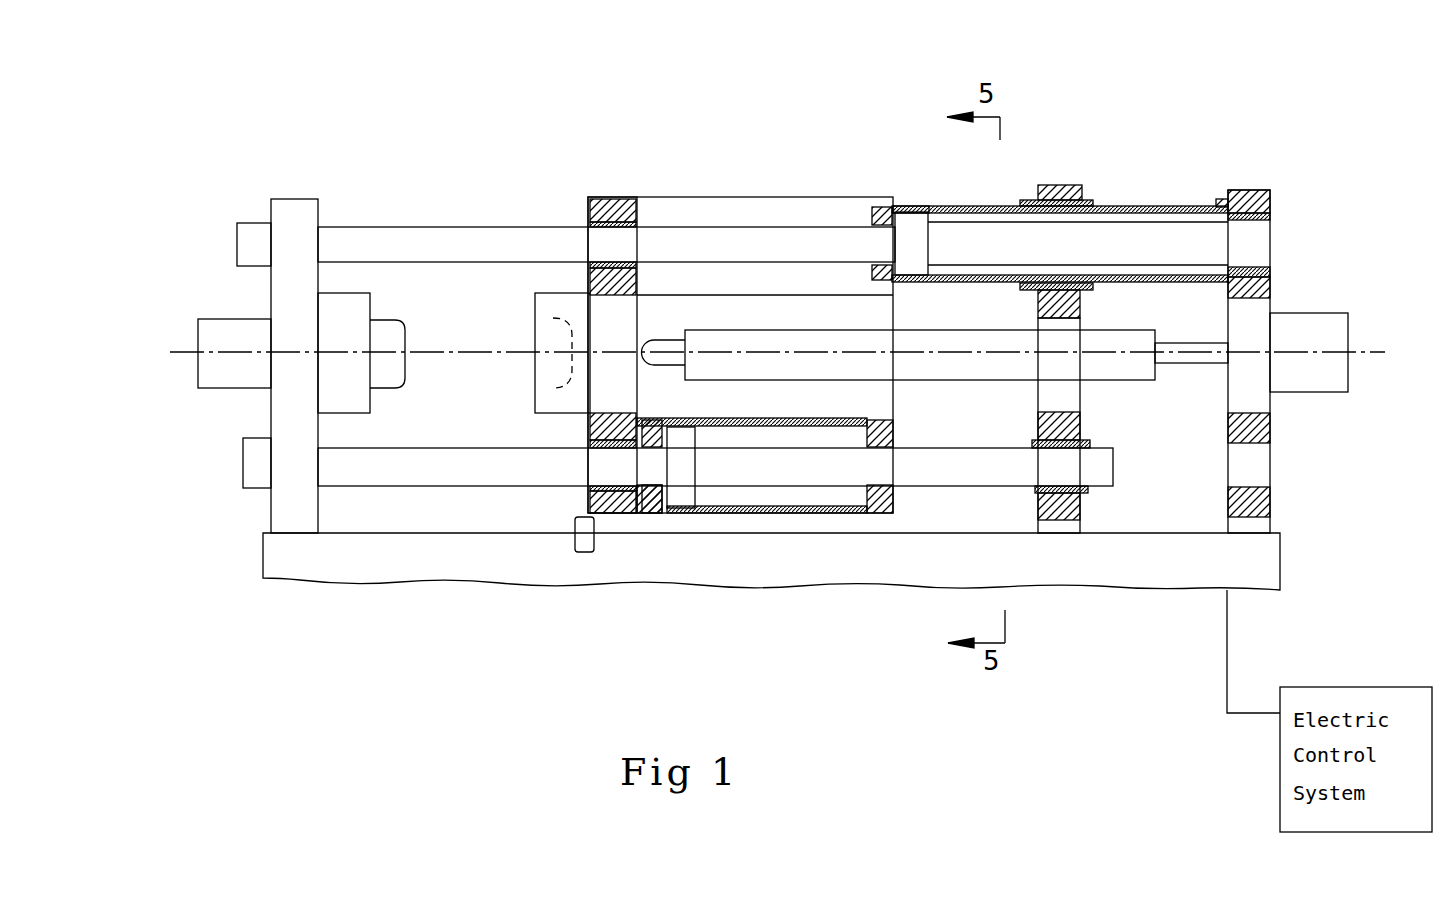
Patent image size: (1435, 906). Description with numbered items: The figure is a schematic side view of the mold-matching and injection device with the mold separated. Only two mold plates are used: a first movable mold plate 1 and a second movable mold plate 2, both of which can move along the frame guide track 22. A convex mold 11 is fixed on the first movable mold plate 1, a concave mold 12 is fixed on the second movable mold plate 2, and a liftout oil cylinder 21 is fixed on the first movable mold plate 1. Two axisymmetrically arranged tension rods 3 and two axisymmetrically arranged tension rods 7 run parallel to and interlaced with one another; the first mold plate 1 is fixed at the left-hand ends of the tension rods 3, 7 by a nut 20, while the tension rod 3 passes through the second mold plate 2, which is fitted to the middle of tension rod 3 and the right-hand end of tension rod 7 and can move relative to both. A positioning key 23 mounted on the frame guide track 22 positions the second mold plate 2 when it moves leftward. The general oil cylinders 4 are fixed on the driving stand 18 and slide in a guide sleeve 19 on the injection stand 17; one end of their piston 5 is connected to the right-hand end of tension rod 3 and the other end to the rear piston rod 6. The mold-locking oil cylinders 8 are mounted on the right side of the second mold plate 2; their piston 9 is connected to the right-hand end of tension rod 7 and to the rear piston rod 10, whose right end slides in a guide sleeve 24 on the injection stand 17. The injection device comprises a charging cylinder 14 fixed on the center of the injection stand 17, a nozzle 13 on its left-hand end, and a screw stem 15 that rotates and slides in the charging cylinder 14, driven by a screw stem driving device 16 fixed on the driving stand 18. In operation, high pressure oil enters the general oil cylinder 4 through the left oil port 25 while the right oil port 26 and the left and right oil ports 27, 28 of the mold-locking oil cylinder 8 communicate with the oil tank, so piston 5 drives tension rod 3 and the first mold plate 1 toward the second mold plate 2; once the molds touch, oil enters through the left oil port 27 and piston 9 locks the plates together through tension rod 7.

The first movable mold plate 1 is at (297, 228).
The second movable mold plate 2 is at (607, 325).
The tension rod 3 is at (425, 247).
The general oil cylinder 4 is at (878, 213).
The piston 5 is at (910, 238).
The rear piston rod 6 is at (1128, 233).
The tension rod 7 is at (470, 465).
The mold-locking oil cylinder 8 is at (642, 513).
The piston 9 is at (687, 460).
The rear piston rod 10 is at (807, 473).
The convex mold 11 is at (350, 327).
The concave mold 12 is at (558, 308).
The nozzle 13 is at (658, 347).
The charging cylinder 14 is at (738, 343).
The screw stem 15 is at (1175, 348).
The screw stem driving device 16 is at (1318, 335).
The injection stand 17 is at (1066, 199).
The driving stand 18 is at (1270, 193).
The guide sleeve 19 is at (1032, 197).
The nut 20 is at (245, 245).
The liftout oil cylinder 21 is at (218, 370).
The frame guide track 22 is at (363, 560).
The positioning key 23 is at (583, 540).
The guide sleeve 24 is at (1068, 517).
The left oil port 25 is at (899, 210).
The right oil port 26 is at (1223, 205).
The left oil port 27 is at (673, 513).
The right oil port 28 is at (860, 517).